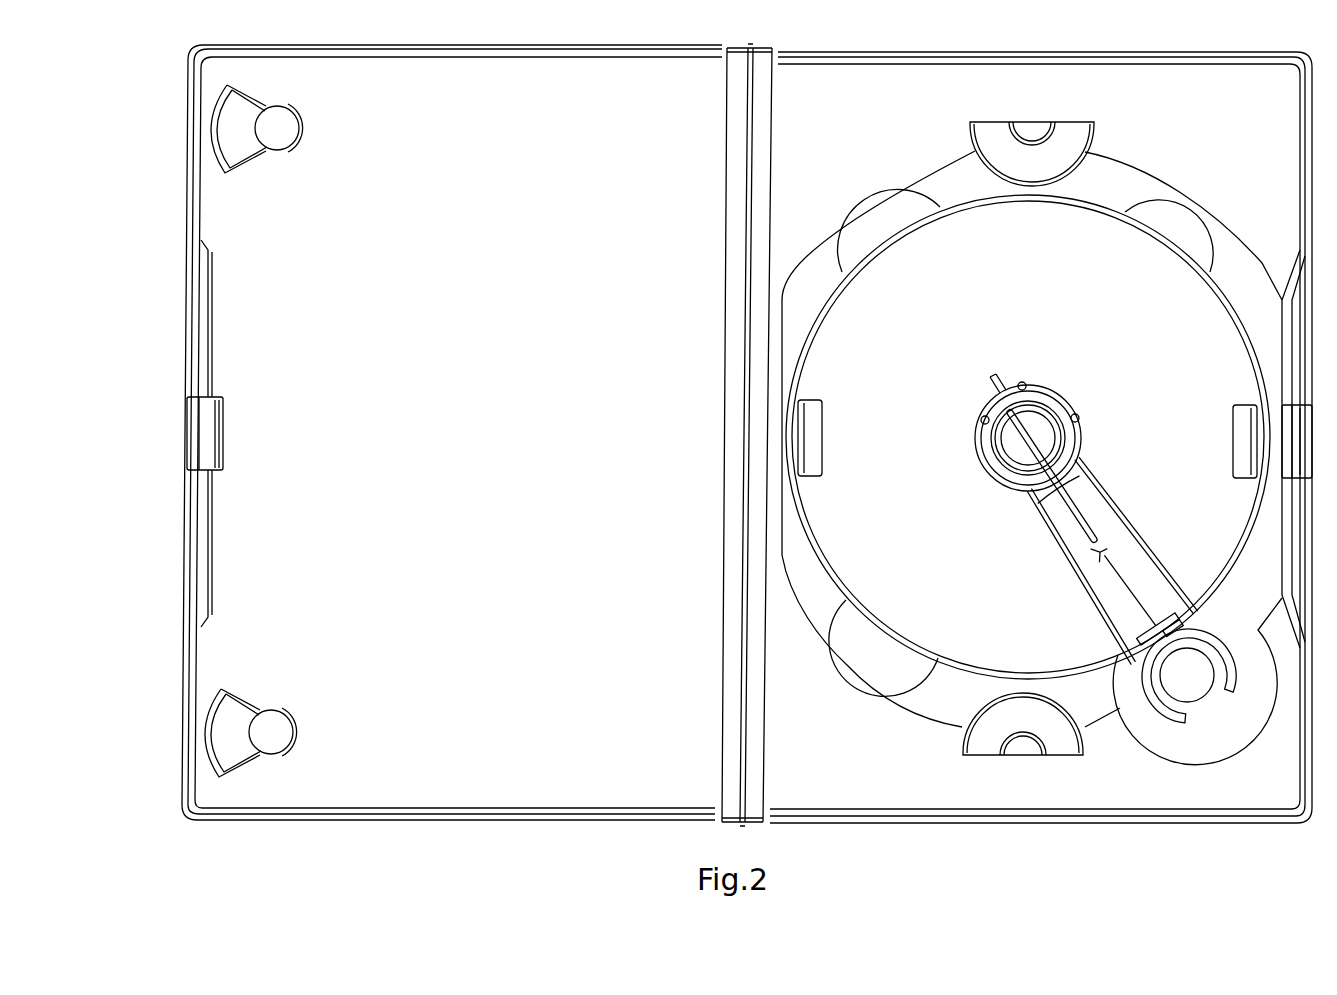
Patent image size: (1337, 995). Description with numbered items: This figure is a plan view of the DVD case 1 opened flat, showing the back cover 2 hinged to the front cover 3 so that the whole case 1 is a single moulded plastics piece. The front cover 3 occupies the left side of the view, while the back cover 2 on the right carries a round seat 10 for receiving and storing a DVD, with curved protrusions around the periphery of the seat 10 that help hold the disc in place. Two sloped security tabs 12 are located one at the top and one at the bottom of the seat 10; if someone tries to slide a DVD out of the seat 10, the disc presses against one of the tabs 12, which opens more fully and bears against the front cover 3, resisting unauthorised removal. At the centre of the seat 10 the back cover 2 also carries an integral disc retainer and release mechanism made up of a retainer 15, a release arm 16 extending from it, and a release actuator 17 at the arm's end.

The DVD case 1 is at (160, 143).
The back cover 2 is at (822, 161).
The front cover 3 is at (472, 439).
The round seat 10 is at (957, 192).
The sloped security tabs 12 is at (1076, 121).
The retainer 15 is at (950, 438).
The release arm 16 is at (1035, 603).
The release actuator 17 is at (1174, 748).